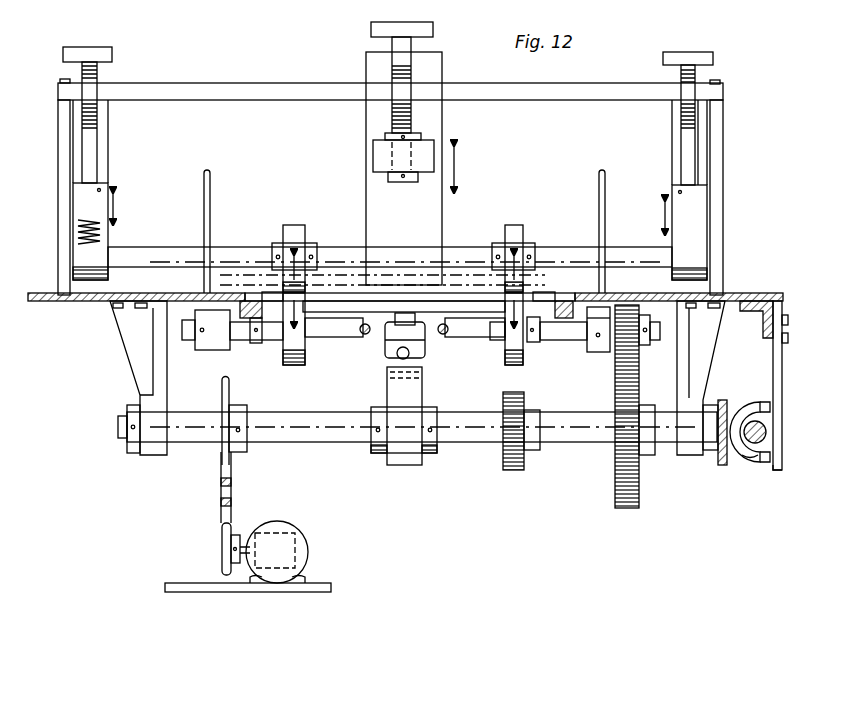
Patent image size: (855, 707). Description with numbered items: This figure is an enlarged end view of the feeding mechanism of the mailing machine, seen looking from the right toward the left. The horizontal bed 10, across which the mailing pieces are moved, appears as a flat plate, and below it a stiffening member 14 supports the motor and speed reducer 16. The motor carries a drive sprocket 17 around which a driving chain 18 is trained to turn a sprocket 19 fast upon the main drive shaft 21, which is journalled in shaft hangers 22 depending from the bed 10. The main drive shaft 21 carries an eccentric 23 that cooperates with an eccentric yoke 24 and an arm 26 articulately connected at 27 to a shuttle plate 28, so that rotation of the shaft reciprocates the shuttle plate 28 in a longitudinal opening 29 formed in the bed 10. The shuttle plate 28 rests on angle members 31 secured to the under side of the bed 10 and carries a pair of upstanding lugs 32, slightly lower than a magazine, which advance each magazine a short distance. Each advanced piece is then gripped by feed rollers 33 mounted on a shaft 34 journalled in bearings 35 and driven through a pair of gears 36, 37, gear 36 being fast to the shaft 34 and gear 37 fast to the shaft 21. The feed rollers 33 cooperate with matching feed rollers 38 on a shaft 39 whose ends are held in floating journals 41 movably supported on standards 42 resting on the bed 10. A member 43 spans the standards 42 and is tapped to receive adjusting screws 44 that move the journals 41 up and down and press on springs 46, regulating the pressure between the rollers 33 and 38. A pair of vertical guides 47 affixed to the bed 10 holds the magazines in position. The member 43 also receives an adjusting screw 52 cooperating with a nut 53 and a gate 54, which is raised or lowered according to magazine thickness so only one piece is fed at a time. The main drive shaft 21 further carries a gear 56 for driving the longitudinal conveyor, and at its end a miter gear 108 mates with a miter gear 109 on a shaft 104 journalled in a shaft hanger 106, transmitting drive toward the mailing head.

The horizontal bed 10 is at (740, 300).
The stiffening member 14 is at (312, 583).
The motor and speed reducer 16 is at (300, 535).
The drive sprocket 17 is at (222, 548).
The driving chain 18 is at (233, 506).
The sprocket 19 is at (230, 398).
The main drive shaft 21 is at (302, 416).
The shaft hanger 22 is at (132, 349).
The eccentric 23 is at (423, 396).
The eccentric yoke 24 is at (408, 466).
The arm 26 is at (410, 357).
The articulated connection 27 is at (390, 340).
The shuttle plate 28 is at (442, 326).
The longitudinal opening 29 is at (244, 297).
The angle member 31 is at (256, 334).
The upstanding lug 32 is at (270, 262).
The feed roller 33 is at (302, 365).
The shaft 34 is at (324, 340).
The bearing 35 is at (215, 350).
The gear 36 is at (640, 346).
The gear 37 is at (615, 460).
The matching feed roller 38 is at (294, 225).
The shaft 39 is at (320, 248).
The floating journal 41 is at (100, 260).
The standard 42 is at (58, 197).
The member 43 is at (281, 84).
The adjusting screw 44 is at (97, 78).
The spring 46 is at (108, 238).
The vertical guide 47 is at (210, 190).
The adjusting screw 52 is at (411, 68).
The nut 53 is at (434, 148).
The gate 54 is at (442, 212).
The gear 56 is at (510, 470).
The shaft 104 is at (752, 405).
The shaft hanger 106 is at (776, 470).
The miter gear 108 is at (720, 462).
The miter gear 109 is at (742, 457).